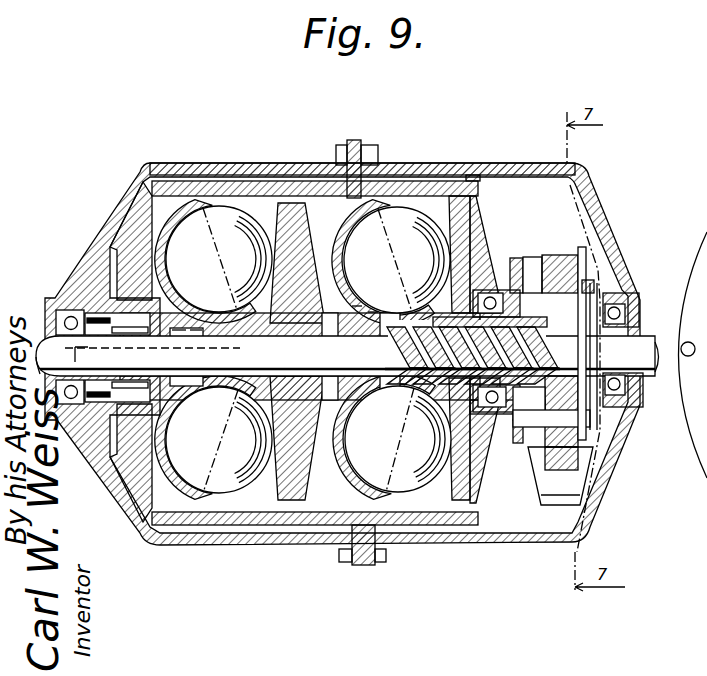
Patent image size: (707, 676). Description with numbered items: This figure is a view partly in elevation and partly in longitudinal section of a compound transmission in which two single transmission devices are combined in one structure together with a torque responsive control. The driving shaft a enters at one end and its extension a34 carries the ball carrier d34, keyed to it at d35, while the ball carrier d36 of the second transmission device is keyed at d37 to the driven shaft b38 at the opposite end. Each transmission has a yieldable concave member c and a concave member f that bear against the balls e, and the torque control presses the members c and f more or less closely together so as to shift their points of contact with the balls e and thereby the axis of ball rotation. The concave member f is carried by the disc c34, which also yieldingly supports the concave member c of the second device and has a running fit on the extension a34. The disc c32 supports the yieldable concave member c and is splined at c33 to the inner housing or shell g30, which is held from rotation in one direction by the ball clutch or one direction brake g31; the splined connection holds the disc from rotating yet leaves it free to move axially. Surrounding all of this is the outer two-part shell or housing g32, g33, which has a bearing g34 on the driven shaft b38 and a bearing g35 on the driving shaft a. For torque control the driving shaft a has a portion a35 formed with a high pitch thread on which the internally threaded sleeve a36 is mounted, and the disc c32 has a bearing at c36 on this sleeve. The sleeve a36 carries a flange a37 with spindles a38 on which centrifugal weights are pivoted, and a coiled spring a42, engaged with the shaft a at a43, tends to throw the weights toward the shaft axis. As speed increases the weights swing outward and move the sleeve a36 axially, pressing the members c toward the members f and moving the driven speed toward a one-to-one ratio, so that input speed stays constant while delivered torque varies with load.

The inner housing or shell g30 is at (193, 184).
The outer part of two-part shell or housing g32 is at (252, 172).
The outer part of two-part shell or housing g33 is at (417, 160).
The spline c33 is at (473, 178).
The concave member c is at (277, 205).
The disc c34 is at (323, 248).
The disc c32 is at (482, 254).
The bearing c36 is at (497, 290).
The concave member f is at (192, 210).
The balls e is at (308, 349).
The ball carrier d36 is at (188, 320).
The key d37 is at (213, 320).
The ball carrier d34 is at (357, 305).
The key d35 is at (371, 311).
The bearing g34 is at (67, 318).
The ball clutch or one direction brake g31 is at (93, 318).
The extension of the driving shaft a34 is at (345, 348).
The driven shaft b38 is at (52, 357).
The high pitch threaded portion a35 is at (406, 490).
The flange a37 is at (530, 256).
The internally threaded sleeve a36 is at (490, 447).
The spindles a38 is at (600, 282).
The coiled spring a42 is at (638, 312).
The spring engagement a43 is at (633, 326).
The bearing g35 is at (636, 294).
The driving shaft a is at (652, 353).